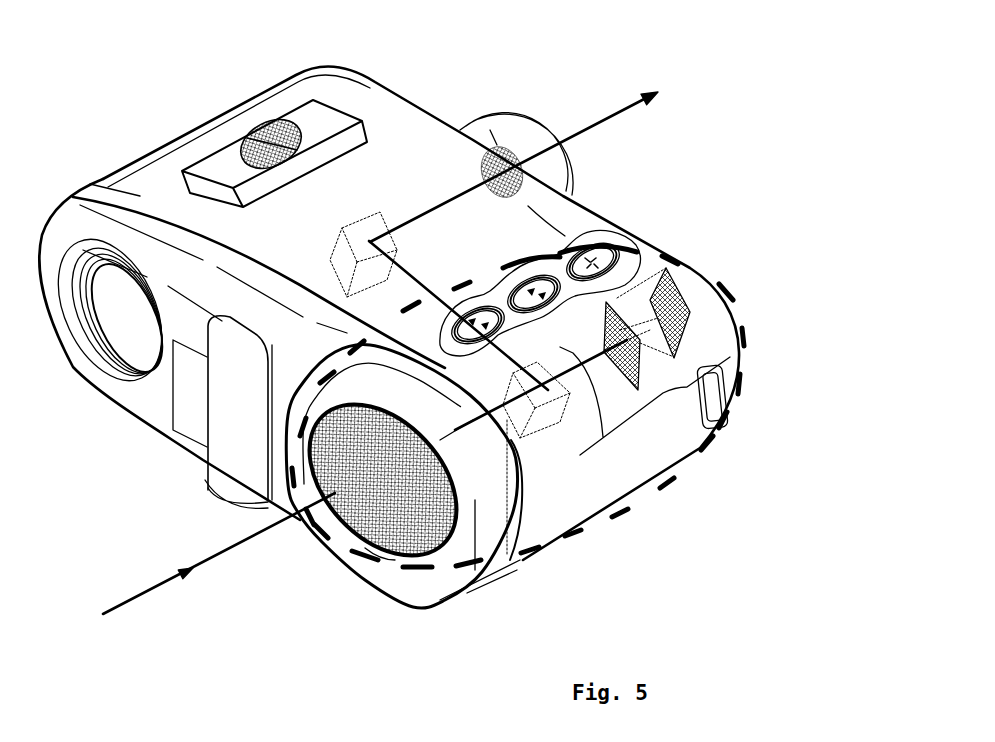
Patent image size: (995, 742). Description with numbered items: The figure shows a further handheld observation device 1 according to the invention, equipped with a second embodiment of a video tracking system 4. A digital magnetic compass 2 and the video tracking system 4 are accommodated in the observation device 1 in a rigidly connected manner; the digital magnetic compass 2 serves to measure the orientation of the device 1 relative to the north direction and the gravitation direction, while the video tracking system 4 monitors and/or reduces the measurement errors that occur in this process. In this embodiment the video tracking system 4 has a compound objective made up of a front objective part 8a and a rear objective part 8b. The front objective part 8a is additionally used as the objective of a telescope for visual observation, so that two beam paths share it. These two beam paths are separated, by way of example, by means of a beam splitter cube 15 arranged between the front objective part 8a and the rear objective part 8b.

The observation device 1 is at (180, 81).
The digital magnetic compass 2 is at (323, 118).
The video tracking system 4 is at (643, 250).
The front objective part 8a is at (365, 538).
The rear objective part 8b is at (623, 357).
The beam splitter cube 15 is at (541, 425).